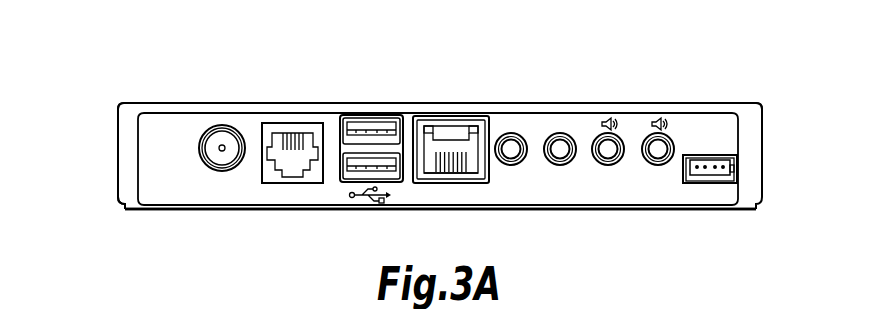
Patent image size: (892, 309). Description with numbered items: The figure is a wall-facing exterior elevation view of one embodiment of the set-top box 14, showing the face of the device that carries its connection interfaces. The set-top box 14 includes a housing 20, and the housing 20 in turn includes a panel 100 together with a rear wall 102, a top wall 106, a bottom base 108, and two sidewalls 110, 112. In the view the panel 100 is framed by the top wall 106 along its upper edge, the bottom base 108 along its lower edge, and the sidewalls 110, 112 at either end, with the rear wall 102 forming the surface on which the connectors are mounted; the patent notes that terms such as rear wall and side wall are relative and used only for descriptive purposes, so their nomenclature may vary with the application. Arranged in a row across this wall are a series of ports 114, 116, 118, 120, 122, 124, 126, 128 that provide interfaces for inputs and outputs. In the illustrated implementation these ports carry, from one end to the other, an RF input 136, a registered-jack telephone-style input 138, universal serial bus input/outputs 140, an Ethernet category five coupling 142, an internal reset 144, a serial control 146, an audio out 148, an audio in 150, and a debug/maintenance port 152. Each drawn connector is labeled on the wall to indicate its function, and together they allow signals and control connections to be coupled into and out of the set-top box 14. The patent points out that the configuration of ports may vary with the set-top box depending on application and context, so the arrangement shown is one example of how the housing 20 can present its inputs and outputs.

The set-top box 14 is at (123, 84).
The panel 100 is at (741, 97).
The rear wall 102 is at (178, 200).
The top wall 106 is at (190, 103).
The bottom base 108 is at (311, 212).
The sidewall 110 is at (762, 147).
The sidewall 112 is at (118, 147).
The housing 20 is at (139, 210).
The port 114 is at (222, 125).
The port 116 is at (296, 123).
The port 118 is at (376, 116).
The port 120 is at (455, 116).
The port 122 is at (515, 133).
The port 124 is at (563, 133).
The port 126 is at (612, 133).
The port 128 is at (661, 133).
The RF input 136 is at (220, 172).
The RJ-45 input 138 is at (270, 185).
The universal serial bus (USB) input/outputs 140 is at (358, 201).
The Ethernet category 5 (Cat 5) coupling 142 is at (448, 184).
The internal reset 144 is at (512, 166).
The RS232 control 146 is at (560, 166).
The audio out 148 is at (608, 166).
The audio in 150 is at (659, 166).
The debug/maintenance port 152 is at (709, 184).